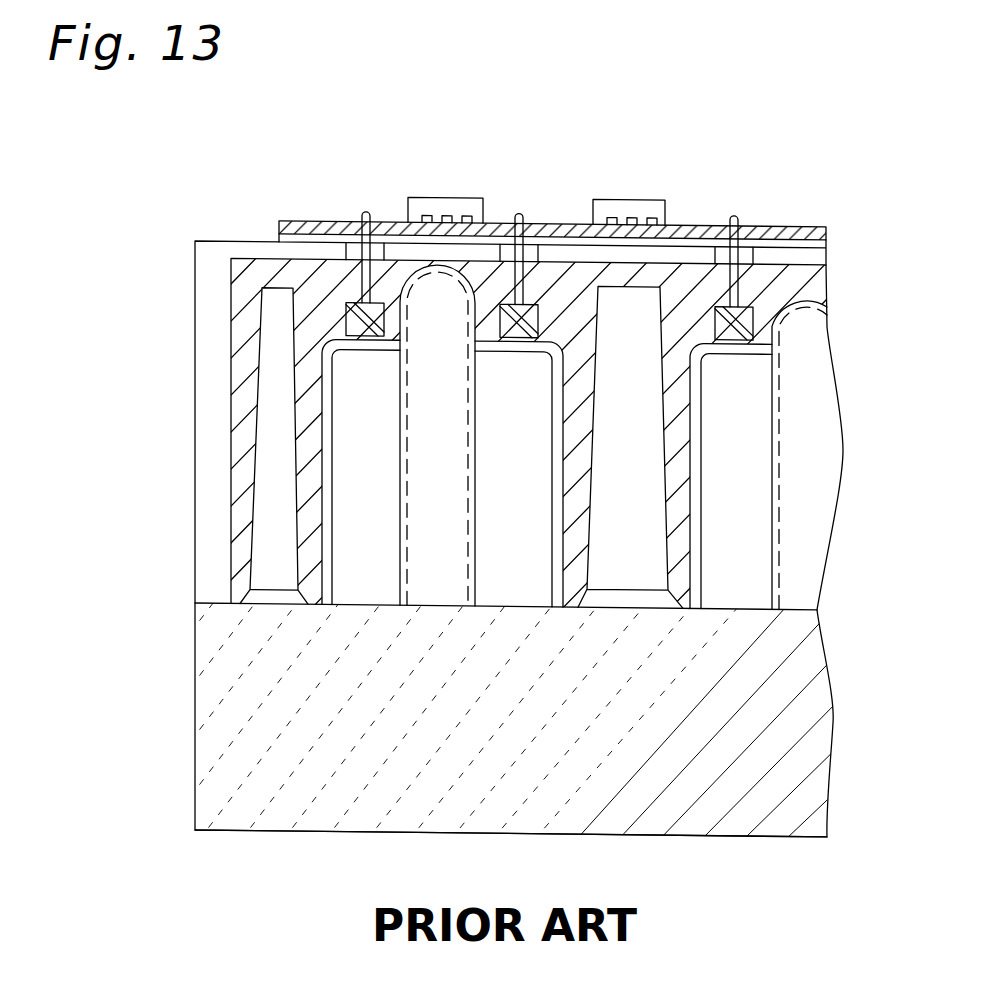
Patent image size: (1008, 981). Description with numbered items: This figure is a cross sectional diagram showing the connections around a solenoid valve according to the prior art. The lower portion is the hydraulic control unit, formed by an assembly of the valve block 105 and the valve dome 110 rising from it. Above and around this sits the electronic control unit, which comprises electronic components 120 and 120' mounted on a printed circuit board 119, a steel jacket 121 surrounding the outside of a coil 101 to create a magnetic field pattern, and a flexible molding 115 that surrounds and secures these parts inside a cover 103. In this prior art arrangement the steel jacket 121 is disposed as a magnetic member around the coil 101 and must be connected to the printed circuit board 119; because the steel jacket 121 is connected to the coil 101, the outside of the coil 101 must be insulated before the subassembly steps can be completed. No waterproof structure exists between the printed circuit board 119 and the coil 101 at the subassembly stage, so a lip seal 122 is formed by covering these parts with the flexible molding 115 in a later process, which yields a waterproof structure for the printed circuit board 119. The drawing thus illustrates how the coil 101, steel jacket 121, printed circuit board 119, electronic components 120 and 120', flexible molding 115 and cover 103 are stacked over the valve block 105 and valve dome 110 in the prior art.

The coil 101 is at (352, 365).
The cover 103 is at (212, 463).
The valve block 105 is at (228, 790).
The valve dome 110 is at (427, 297).
The flexible molding 115 is at (248, 288).
The printed circuit board 119 is at (775, 233).
The electronic component 120 is at (485, 166).
The electronic component 120' is at (643, 164).
The steel jacket 121 is at (323, 398).
The lip seal 122 is at (239, 606).